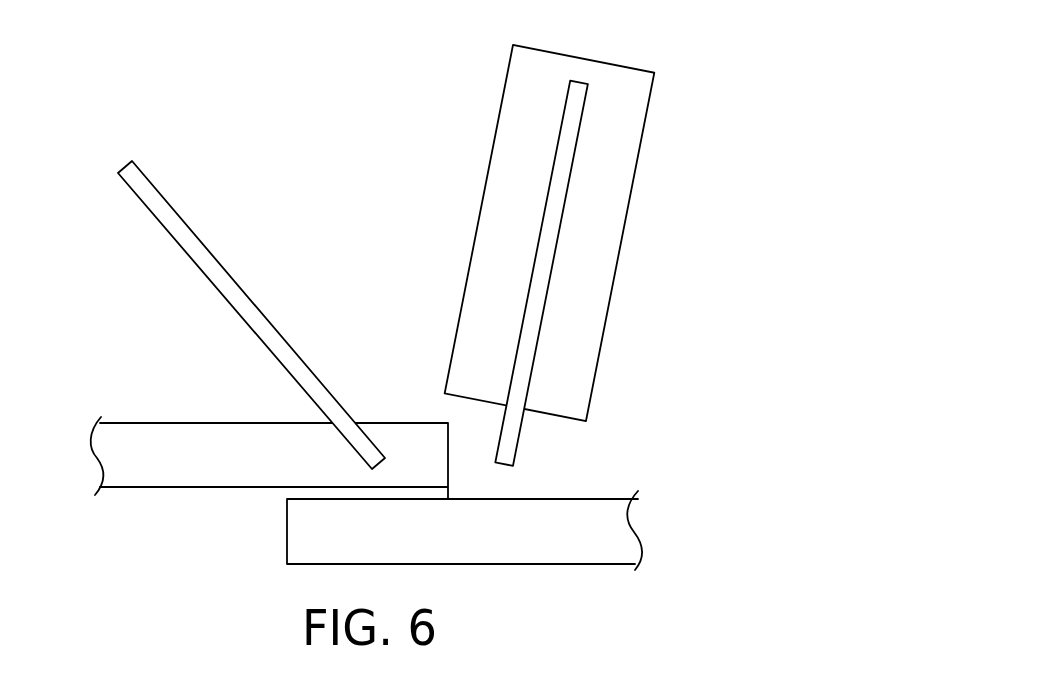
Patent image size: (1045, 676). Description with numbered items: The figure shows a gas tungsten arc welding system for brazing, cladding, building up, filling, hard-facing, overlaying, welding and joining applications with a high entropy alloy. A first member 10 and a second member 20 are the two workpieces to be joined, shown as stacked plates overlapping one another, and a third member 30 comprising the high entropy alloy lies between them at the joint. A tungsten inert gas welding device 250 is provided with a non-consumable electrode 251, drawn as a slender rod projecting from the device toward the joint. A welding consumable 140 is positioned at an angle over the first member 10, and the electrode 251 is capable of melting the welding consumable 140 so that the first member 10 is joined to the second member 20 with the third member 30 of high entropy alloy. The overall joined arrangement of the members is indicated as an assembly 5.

The assembly 5 is at (366, 489).
The first member 10 is at (147, 422).
The second member 20 is at (548, 565).
The third member 30 is at (298, 494).
The welding consumable 140 is at (178, 227).
The tungsten inert gas welding device 250 is at (662, 232).
The non-consumable electrode 251 is at (513, 438).